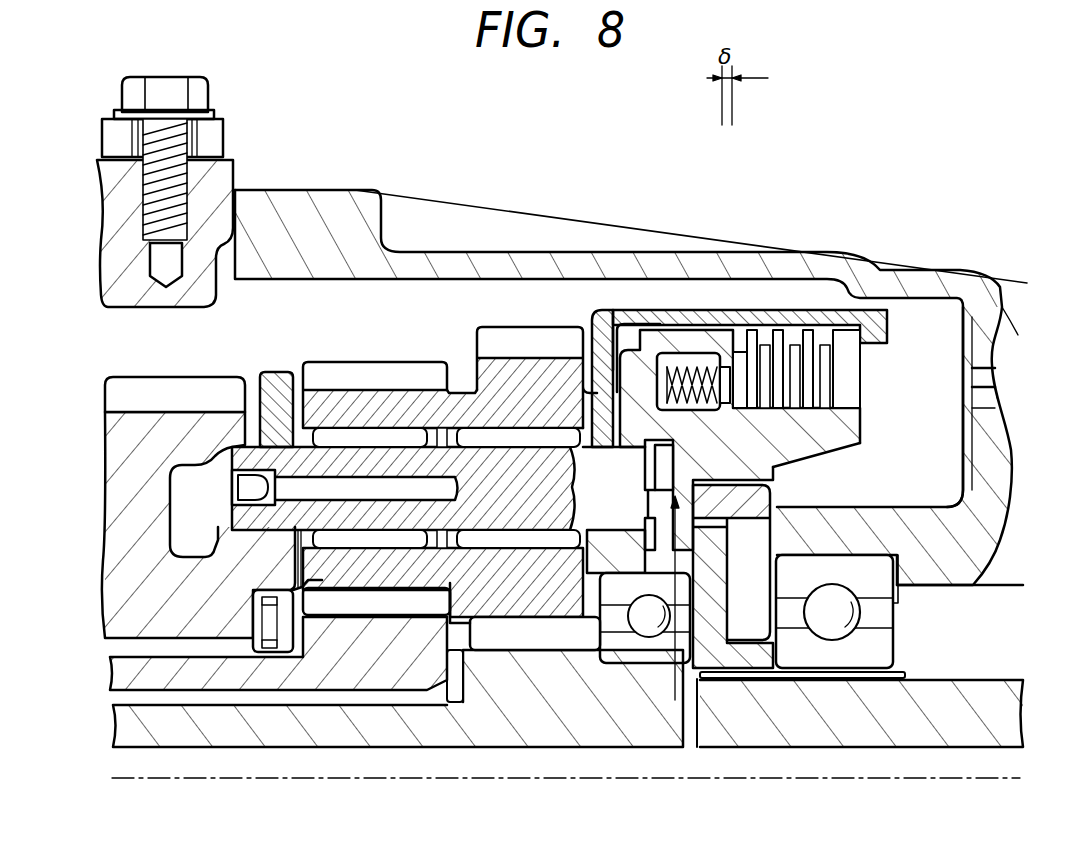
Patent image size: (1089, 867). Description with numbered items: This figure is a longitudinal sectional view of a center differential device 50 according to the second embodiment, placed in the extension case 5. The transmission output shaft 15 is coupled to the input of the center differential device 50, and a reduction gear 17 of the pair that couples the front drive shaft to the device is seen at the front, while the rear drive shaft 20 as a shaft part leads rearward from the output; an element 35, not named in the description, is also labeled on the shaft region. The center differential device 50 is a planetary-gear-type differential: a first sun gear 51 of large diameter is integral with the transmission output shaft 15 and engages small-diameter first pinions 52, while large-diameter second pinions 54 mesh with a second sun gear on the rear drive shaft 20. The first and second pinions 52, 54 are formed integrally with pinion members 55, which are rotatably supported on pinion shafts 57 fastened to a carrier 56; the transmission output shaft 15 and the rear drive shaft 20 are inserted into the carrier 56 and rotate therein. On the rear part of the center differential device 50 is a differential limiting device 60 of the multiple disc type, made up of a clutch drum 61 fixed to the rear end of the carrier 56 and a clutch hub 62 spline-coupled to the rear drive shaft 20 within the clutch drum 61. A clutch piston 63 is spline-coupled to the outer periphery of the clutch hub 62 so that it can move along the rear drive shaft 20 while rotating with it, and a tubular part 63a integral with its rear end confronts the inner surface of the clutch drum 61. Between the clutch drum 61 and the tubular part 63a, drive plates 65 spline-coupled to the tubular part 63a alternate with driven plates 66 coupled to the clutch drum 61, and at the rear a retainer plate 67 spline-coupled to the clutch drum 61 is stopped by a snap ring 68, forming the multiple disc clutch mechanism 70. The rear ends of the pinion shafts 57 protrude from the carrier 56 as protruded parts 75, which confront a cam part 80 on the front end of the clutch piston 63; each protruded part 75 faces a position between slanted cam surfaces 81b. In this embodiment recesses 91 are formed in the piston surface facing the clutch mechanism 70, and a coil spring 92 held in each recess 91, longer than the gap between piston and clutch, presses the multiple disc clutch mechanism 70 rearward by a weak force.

The extension case 5 is at (291, 198).
The transmission output shaft 15 is at (228, 677).
The reduction gear 17 is at (170, 390).
The rear drive shaft 20 is at (655, 730).
The sleeve 35 is at (593, 637).
The center differential device 50 is at (500, 306).
The first sun gear 51 is at (298, 610).
The first pinion 52 is at (403, 370).
The second pinion 54 is at (545, 335).
The pinion member 55 is at (461, 385).
The carrier 56 is at (608, 398).
The pinion shaft 57 is at (345, 450).
The differential limiting device 60 is at (780, 303).
The clutch drum 61 is at (808, 335).
The clutch hub 62 is at (720, 550).
The clutch piston 63 is at (637, 408).
The tubular part 63a is at (867, 435).
The drive plate 65 is at (753, 345).
The driven plate 66 is at (780, 345).
The retainer plate 67 is at (836, 334).
The snap ring 68 is at (858, 338).
The multiple disc clutch mechanism 70 is at (893, 407).
The protruded part 75 is at (620, 390).
The cam part 80 is at (700, 668).
The slanted cam surface 81b is at (683, 490).
The recess 91 is at (718, 365).
The coil spring 92 is at (690, 365).